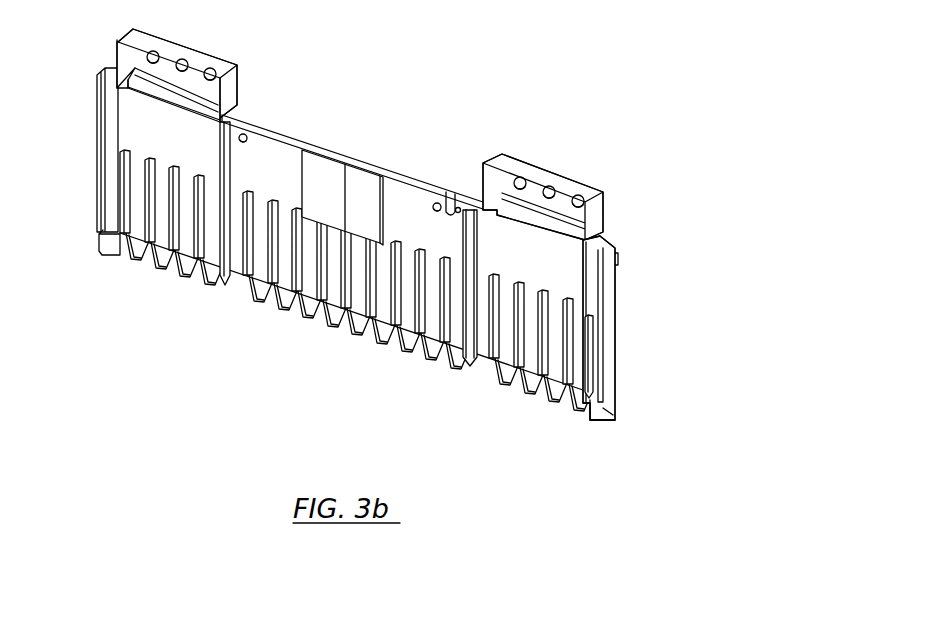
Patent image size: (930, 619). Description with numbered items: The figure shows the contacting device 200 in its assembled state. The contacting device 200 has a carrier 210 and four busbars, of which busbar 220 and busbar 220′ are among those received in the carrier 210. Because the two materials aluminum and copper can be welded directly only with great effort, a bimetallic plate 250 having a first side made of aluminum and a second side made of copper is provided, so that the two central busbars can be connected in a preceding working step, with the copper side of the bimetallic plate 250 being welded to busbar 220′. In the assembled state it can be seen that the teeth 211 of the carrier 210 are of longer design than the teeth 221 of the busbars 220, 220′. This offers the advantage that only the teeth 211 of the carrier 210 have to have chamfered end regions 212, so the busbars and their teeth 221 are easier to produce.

The contacting device 200 is at (431, 307).
The carrier 210 is at (443, 167).
The teeth of the carrier 211 is at (592, 380).
The chamfered end regions 212 is at (580, 402).
The busbar 220 is at (503, 263).
The busbar 220′ is at (385, 232).
The teeth of the busbars 221 is at (577, 335).
The bimetallic plate 250 is at (345, 203).